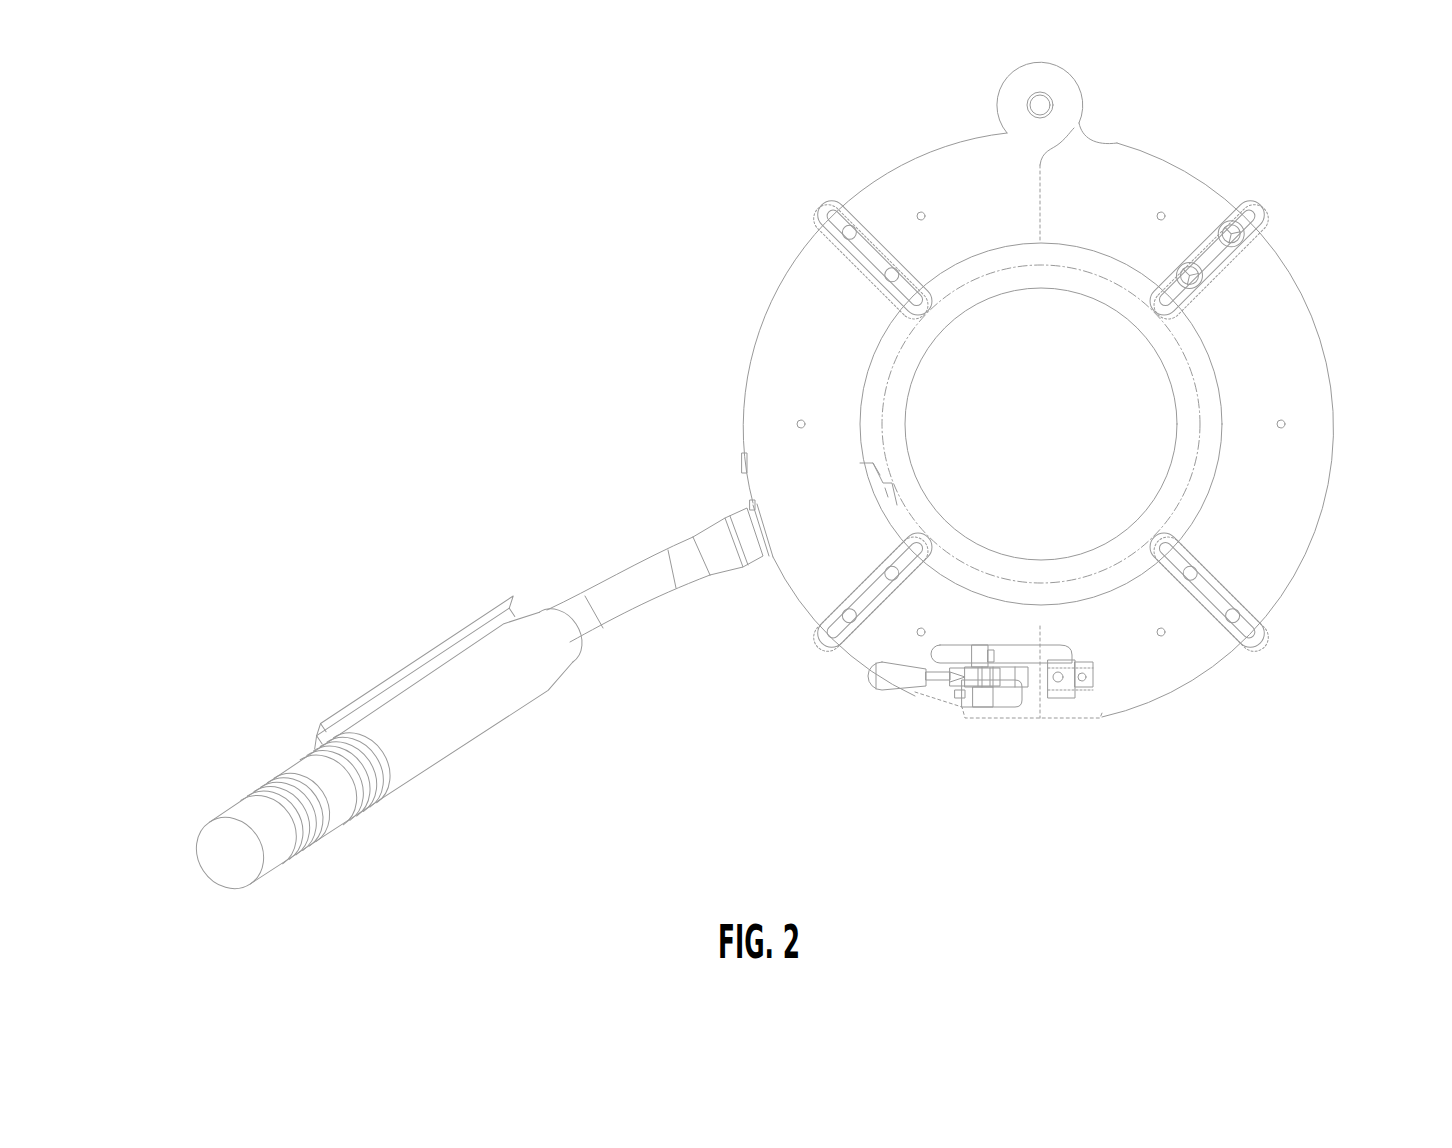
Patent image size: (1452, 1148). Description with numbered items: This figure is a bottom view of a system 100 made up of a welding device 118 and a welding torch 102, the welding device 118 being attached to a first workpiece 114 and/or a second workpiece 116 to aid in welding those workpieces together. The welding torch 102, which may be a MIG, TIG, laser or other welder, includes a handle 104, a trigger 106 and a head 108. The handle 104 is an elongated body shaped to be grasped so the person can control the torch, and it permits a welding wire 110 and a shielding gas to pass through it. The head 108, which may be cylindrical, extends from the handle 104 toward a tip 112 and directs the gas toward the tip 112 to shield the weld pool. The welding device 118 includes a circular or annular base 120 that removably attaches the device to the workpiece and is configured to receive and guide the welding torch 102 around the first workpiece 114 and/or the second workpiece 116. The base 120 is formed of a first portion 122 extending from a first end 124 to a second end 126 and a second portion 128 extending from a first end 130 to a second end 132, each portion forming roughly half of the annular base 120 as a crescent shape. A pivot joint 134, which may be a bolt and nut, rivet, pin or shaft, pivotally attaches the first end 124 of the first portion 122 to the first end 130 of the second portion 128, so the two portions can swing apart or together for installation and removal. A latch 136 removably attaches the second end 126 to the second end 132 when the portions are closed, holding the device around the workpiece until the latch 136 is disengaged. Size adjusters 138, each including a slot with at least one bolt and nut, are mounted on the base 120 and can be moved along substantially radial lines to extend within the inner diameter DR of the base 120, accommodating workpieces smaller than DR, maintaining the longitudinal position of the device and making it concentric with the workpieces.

The system 100 is at (1302, 129).
The welding torch 102 is at (396, 577).
The handle 104 is at (240, 808).
The trigger 106 is at (357, 708).
The head 108 is at (737, 517).
The welding wire 110 is at (920, 476).
The tip 112 is at (890, 508).
The first workpiece 114 is at (1187, 363).
The second workpiece 116 is at (1143, 415).
The welding device 118 is at (720, 260).
The base 120 is at (1285, 356).
The first portion 122 is at (927, 195).
The first end 124 is at (1028, 165).
The second end 126 is at (1038, 627).
The second portion 128 is at (1130, 190).
The first end 130 is at (1040, 193).
The second end 132 is at (1040, 628).
The pivot joint 134 is at (1030, 96).
The latch 136 is at (1092, 677).
The size adjusters 138 is at (825, 648).
The inner diameter of the base DR is at (1203, 507).